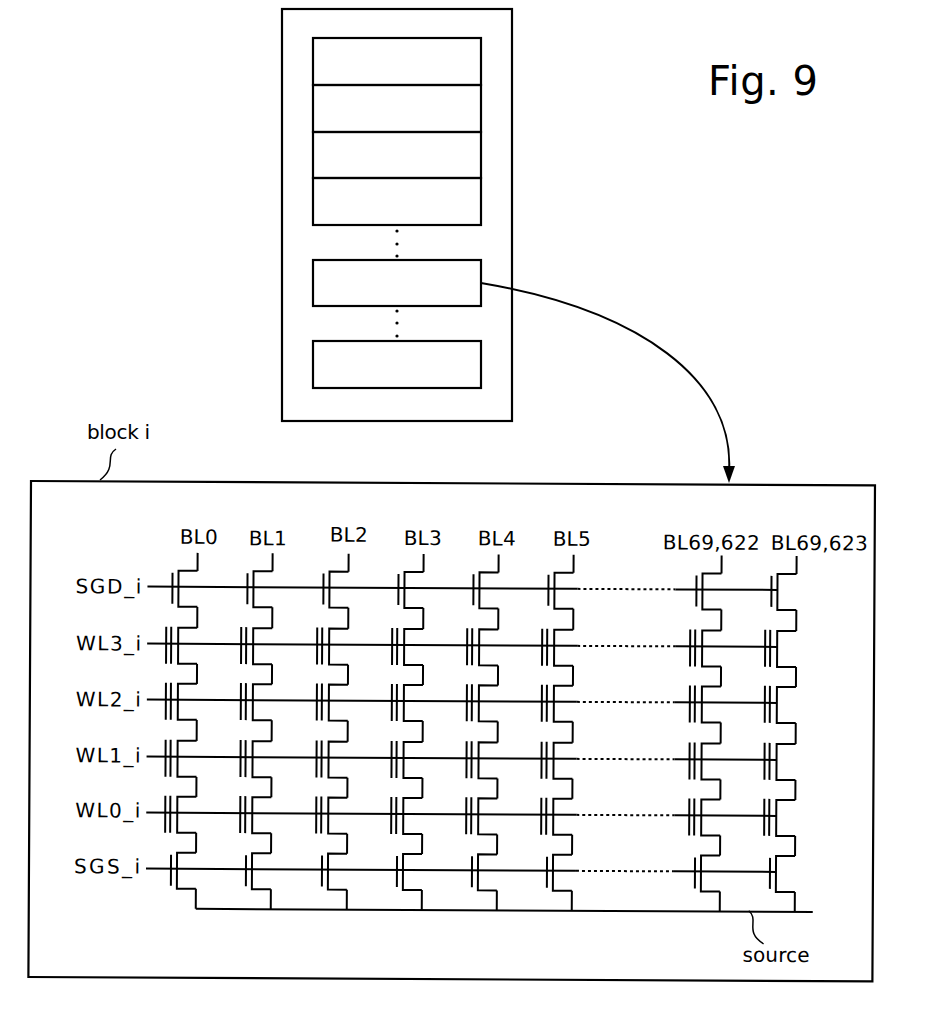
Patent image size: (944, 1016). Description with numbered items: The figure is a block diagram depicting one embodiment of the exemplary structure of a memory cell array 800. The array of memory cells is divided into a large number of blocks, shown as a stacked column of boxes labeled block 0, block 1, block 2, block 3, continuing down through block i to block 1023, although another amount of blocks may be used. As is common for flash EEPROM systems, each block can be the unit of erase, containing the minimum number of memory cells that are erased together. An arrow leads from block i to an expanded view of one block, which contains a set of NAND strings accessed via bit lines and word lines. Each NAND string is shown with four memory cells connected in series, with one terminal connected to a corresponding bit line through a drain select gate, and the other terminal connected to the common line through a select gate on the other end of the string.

The memory cell array 800 is at (442, 215).
The block 0 is at (397, 61).
The block 1 is at (397, 108).
The block 2 is at (397, 155).
The block 3 is at (397, 201).
The block 1023 is at (397, 364).